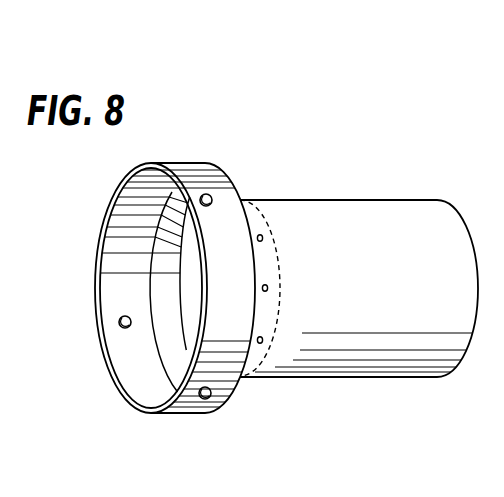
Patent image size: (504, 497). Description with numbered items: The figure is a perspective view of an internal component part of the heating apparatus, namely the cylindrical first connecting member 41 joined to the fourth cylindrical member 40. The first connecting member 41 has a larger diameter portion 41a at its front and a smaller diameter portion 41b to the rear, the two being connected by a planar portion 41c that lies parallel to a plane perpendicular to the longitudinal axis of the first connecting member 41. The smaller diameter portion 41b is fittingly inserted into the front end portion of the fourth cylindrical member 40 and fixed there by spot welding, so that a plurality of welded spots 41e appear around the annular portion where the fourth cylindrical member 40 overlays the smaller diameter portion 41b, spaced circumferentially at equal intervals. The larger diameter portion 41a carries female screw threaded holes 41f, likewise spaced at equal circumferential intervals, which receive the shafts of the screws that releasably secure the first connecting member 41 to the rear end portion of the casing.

The fourth cylindrical member 40 is at (413, 357).
The first connecting member 41 is at (227, 192).
The larger diameter portion 41a is at (200, 188).
The smaller diameter portion 41b is at (247, 207).
The planar portion 41c is at (178, 342).
The welded spots 41e is at (263, 238).
The female screw threaded holes 41f is at (192, 189).